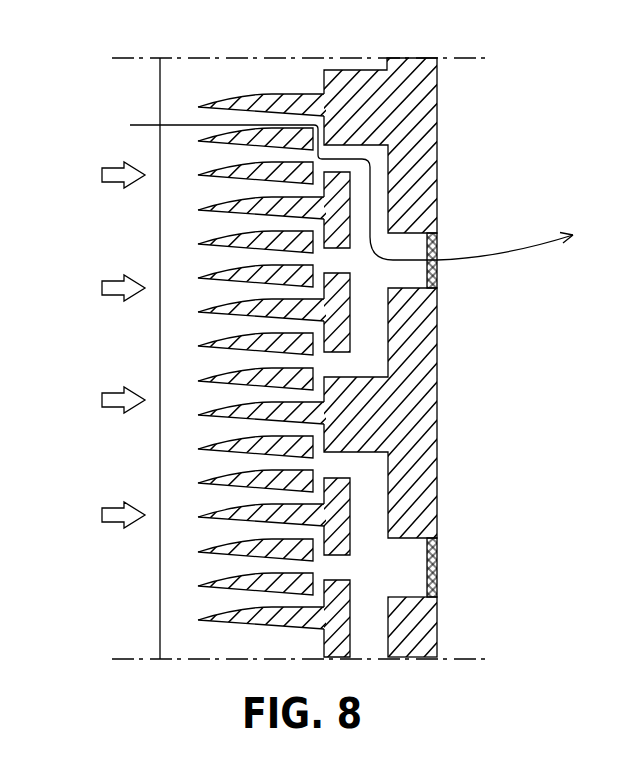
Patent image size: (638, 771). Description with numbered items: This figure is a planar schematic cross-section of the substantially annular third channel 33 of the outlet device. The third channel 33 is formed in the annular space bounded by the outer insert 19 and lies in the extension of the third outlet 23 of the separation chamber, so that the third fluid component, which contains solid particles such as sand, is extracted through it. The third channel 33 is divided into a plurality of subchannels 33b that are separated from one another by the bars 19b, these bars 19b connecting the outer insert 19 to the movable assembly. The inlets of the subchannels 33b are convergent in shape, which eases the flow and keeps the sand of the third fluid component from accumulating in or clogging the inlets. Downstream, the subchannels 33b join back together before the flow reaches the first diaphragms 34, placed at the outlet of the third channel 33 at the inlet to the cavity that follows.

The outer insert 19 is at (200, 80).
The bars 19b is at (362, 97).
The third extraction channel 33 is at (217, 230).
The subchannels 33b is at (210, 497).
The third outlet 23 is at (139, 346).
The first diaphragm 34 is at (433, 285).